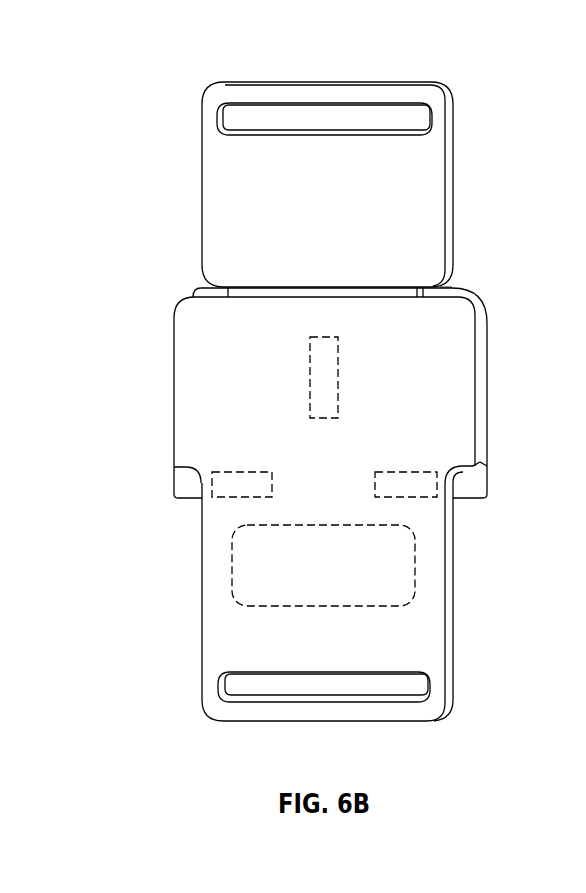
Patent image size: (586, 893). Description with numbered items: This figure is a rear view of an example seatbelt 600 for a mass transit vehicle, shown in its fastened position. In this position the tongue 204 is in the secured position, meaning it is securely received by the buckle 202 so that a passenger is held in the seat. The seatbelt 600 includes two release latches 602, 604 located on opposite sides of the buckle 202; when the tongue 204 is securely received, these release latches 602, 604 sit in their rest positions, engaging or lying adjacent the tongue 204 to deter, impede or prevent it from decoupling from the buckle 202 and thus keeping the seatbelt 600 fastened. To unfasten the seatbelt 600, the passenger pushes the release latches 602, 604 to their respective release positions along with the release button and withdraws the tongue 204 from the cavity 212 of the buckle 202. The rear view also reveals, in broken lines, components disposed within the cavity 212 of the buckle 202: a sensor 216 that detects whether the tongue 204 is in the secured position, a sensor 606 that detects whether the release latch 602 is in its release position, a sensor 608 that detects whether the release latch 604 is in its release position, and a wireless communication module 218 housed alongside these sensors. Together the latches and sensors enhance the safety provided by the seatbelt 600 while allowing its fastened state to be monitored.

The seatbelt 600 is at (229, 54).
The buckle 202 is at (208, 348).
The tongue 204 is at (257, 292).
The cavity 212 is at (452, 285).
The sensor 216 is at (310, 348).
The wireless communication module 218 is at (372, 578).
The release latch 602 is at (467, 483).
The release latch 604 is at (190, 487).
The sensor 606 is at (427, 472).
The sensor 608 is at (228, 497).